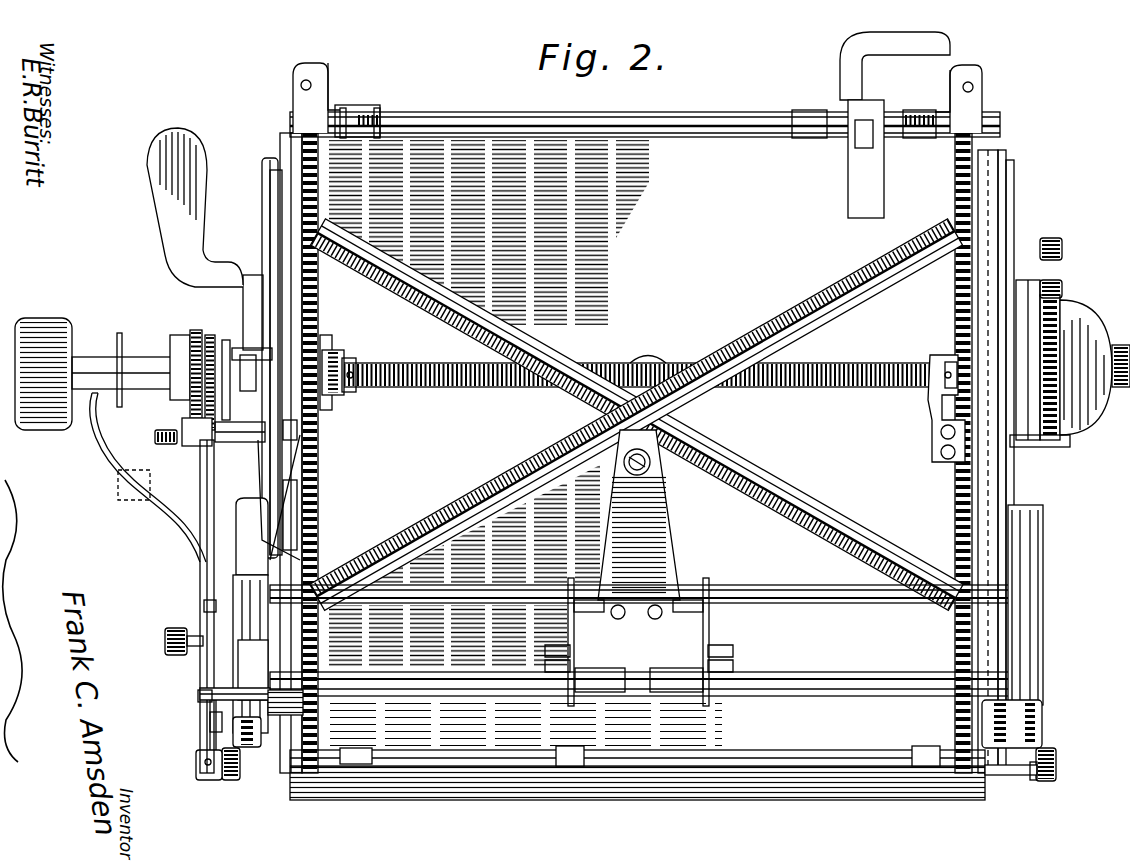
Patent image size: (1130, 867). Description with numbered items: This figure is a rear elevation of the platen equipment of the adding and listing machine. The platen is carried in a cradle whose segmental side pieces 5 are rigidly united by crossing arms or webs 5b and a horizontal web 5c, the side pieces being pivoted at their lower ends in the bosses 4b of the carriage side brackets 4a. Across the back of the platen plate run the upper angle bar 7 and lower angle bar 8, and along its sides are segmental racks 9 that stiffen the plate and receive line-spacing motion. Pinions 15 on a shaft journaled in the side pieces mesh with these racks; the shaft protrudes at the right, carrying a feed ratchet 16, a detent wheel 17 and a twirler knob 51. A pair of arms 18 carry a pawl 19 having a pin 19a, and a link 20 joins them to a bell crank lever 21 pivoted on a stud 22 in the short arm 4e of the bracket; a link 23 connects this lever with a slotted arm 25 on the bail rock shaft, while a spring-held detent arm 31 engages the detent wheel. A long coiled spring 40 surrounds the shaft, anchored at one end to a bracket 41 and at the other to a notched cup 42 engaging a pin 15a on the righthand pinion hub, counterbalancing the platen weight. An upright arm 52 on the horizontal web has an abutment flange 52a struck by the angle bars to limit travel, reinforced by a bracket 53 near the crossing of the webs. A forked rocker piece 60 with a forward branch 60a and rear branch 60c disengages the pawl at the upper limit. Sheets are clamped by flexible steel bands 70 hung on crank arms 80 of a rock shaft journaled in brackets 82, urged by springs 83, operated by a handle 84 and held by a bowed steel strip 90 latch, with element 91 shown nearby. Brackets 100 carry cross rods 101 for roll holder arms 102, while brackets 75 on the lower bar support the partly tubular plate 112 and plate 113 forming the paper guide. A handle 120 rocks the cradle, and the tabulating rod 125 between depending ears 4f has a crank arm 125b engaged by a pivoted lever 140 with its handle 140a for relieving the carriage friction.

The side brackets 4a is at (1030, 640).
The bosses 4b is at (1042, 725).
The short arm 4e is at (332, 722).
The depending ears 4f is at (1030, 792).
The segmental side pieces 5 is at (264, 162).
The crossing arms or webs 5b is at (486, 312).
The horizontal web 5c is at (745, 580).
The upper angle bar 7 is at (728, 137).
The lower angle bar 8 is at (825, 750).
The segmental racks 9 is at (340, 200).
The pinions 15 is at (322, 332).
The pin 15a is at (342, 392).
The feed ratchet 16 is at (245, 290).
The detent wheel 17 is at (190, 355).
The arms 18 is at (190, 355).
The pawl 19 is at (230, 435).
The pin 19a is at (300, 440).
The link 20 is at (208, 490).
The bell crank lever 21 is at (204, 738).
The stud 22 is at (200, 697).
The link 23 is at (262, 668).
The slotted arm 25 is at (226, 610).
The detent arm 31 is at (182, 424).
The coiled spring 40 is at (607, 362).
The bracket 41 is at (938, 410).
The notched cup 42 is at (330, 358).
The twirler knob 51 is at (40, 316).
The upright arm 52 is at (674, 500).
The abutment flange 52a is at (662, 361).
The bracket 53 is at (652, 440).
The forked rocker piece 60 is at (338, 517).
The forward branch 60a is at (362, 430).
The rear branch 60c is at (259, 362).
The flexible steel bands 70 is at (294, 108).
The brackets 75 is at (378, 750).
The crank arms 80 is at (332, 98).
The brackets 82 is at (383, 102).
The springs 83 is at (372, 108).
The handle 84 is at (840, 60).
The bowed steel strip 90 is at (841, 168).
The latch 91 is at (856, 148).
The brackets 100 is at (262, 650).
The cross rods 101 is at (767, 676).
The arms 102 is at (700, 640).
The partly tubular plate 112 is at (874, 770).
The plate 113 is at (880, 782).
The handle 120 is at (162, 196).
The tabulating rod 125 is at (1005, 778).
The crank arm 125b is at (210, 722).
The pivoted arm or lever 140 is at (230, 620).
The handle 140a is at (185, 440).